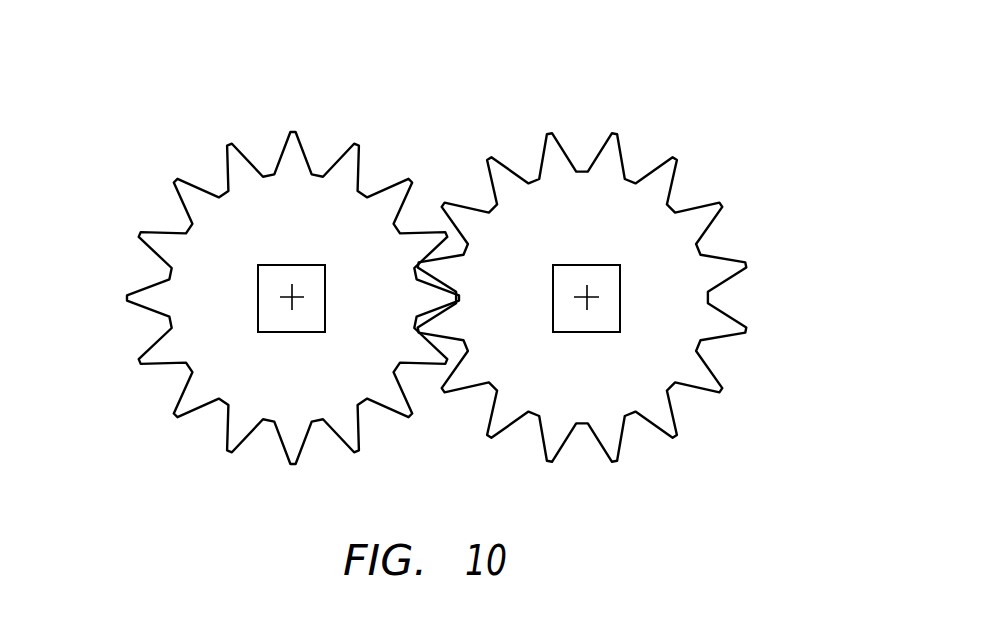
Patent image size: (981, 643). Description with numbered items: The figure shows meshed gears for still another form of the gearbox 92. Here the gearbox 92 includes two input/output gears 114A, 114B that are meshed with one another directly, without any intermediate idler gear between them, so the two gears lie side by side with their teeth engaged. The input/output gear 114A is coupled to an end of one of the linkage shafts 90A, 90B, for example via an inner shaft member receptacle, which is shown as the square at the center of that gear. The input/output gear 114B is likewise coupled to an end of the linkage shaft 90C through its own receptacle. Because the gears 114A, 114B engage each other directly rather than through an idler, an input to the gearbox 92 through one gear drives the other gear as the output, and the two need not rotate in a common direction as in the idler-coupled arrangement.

The gearbox 92 is at (421, 234).
The input/output gear 114A is at (252, 248).
The input/output gear 114B is at (607, 243).
The linkage shaft 90A is at (185, 253).
The linkage shaft 90B is at (252, 264).
The linkage shaft 90C is at (634, 283).